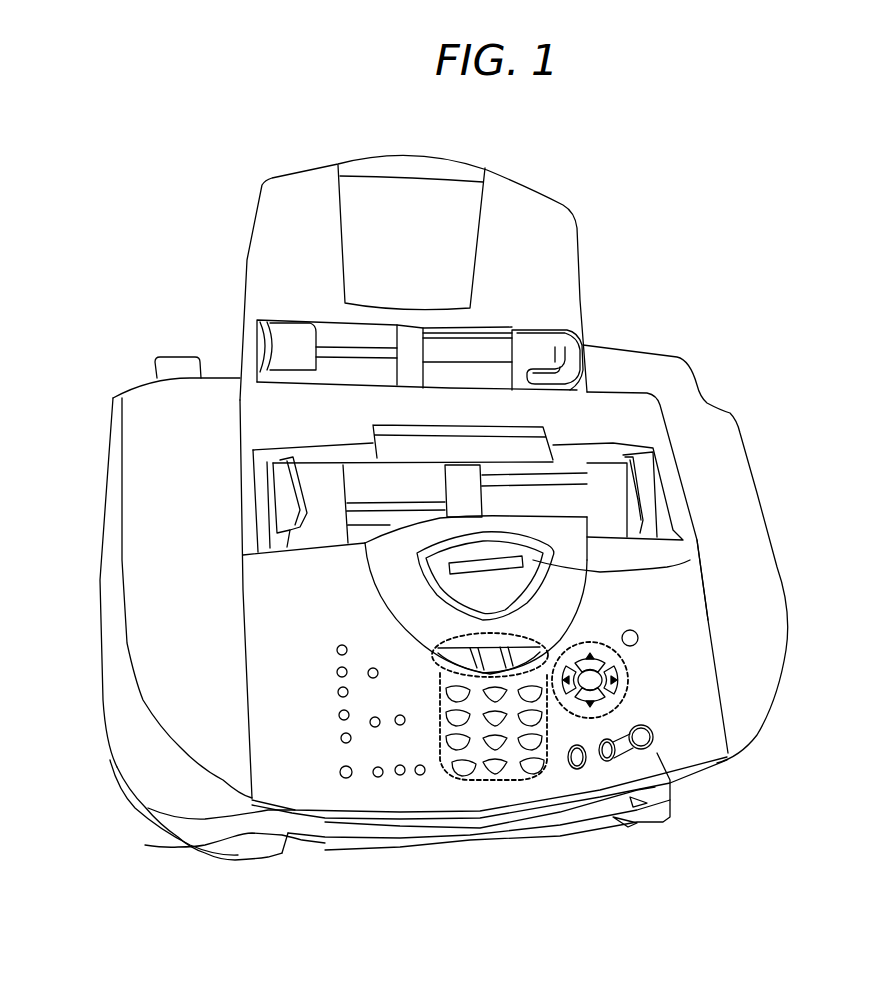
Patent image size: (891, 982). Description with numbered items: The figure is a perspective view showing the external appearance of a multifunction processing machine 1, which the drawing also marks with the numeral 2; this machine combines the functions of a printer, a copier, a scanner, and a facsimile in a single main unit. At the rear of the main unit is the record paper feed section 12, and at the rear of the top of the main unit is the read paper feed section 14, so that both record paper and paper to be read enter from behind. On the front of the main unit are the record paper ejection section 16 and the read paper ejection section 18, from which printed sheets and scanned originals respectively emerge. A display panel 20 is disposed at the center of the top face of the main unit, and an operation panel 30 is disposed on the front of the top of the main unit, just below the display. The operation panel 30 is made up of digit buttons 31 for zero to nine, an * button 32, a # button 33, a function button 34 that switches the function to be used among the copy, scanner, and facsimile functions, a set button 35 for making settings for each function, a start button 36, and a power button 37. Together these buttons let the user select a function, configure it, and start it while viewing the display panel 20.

The multifunction processing machine 1 is at (410, 512).
The image forming apparatus 2 is at (112, 258).
The record paper feed section 12 is at (538, 340).
The read paper feed section 14 is at (610, 480).
The record paper ejection section 16 is at (178, 847).
The read paper ejection section 18 is at (148, 808).
The display panel 20 is at (600, 572).
The operation panel 30 is at (672, 590).
The numeric keypad 31 is at (505, 782).
The * button 32 is at (462, 778).
The # button 33 is at (540, 776).
The function button 34 is at (545, 632).
The set button 35 is at (626, 685).
The start button 36 is at (648, 743).
The power button 37 is at (638, 641).